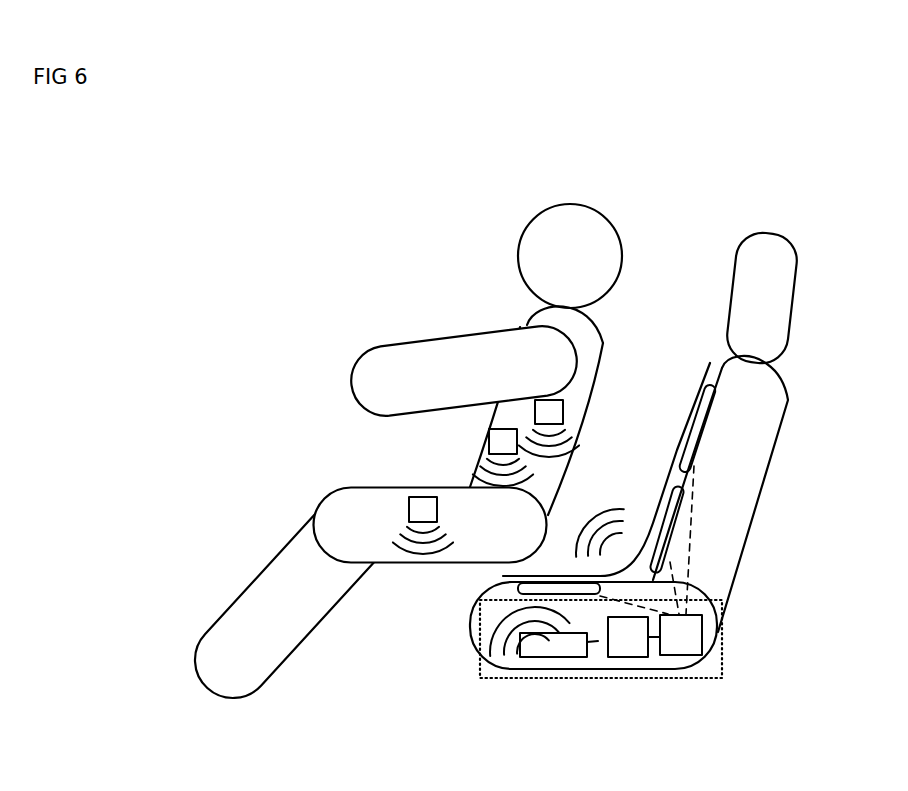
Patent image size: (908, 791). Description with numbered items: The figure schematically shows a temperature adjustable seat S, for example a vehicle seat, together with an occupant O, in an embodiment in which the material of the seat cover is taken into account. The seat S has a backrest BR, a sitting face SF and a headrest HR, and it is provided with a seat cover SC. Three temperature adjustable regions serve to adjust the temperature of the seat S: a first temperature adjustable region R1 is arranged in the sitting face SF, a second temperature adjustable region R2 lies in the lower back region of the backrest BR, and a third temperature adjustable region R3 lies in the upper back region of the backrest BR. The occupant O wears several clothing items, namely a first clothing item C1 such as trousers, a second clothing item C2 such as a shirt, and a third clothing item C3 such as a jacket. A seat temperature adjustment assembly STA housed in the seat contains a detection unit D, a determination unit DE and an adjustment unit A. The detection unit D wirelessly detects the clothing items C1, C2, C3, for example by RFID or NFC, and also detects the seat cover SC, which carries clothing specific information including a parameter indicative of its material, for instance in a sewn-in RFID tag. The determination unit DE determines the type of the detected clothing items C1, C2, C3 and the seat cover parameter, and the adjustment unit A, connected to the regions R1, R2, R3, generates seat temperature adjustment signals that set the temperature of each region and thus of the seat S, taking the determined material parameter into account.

The temperature adjustable seat S is at (646, 483).
The headrest HR is at (797, 291).
The backrest BR is at (757, 507).
The seat cover SC is at (676, 428).
The sitting face SF is at (470, 640).
The first temperature adjustable region R1 is at (562, 582).
The second temperature adjustable region R2 is at (676, 525).
The third temperature adjustable region R3 is at (692, 433).
The seat temperature adjustment assembly STA is at (628, 668).
The detection unit D is at (525, 658).
The determination unit DE is at (626, 658).
The adjustment unit A is at (686, 656).
The occupant O is at (408, 451).
The first clothing item C1 is at (421, 497).
The second clothing item C2 is at (488, 437).
The third clothing item C3 is at (562, 412).